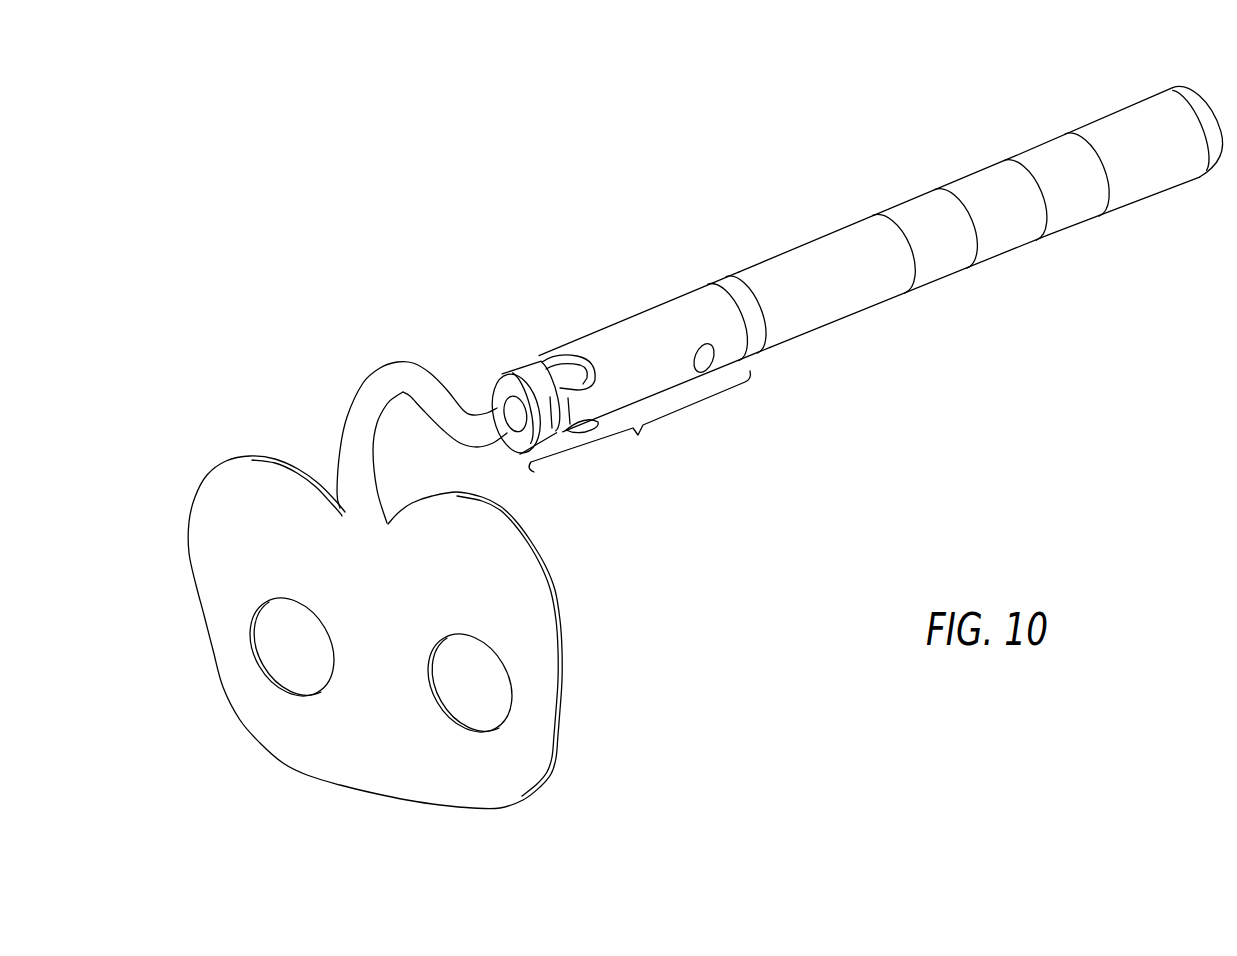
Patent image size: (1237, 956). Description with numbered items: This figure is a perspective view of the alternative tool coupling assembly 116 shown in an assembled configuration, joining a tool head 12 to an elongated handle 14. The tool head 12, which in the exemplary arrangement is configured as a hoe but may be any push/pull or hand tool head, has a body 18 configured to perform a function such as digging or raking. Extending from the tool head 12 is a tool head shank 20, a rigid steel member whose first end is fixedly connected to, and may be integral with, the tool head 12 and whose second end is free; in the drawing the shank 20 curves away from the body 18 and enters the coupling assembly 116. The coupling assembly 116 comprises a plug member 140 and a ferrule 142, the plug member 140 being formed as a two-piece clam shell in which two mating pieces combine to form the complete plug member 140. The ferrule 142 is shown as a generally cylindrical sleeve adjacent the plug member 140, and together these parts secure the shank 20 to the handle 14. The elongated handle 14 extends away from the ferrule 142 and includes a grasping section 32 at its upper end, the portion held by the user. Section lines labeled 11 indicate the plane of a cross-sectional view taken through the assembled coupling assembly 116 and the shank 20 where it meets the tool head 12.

The section line 11- 11 is at (413, 460).
The tool head 12 is at (583, 651).
The elongated handle 14 is at (900, 182).
The body 18 is at (522, 748).
The tool head shank 20 is at (497, 408).
The grasping section 32 is at (1050, 153).
The coupling assembly 116 is at (639, 422).
The plug member 140 is at (512, 365).
The ferrule 142 is at (603, 327).